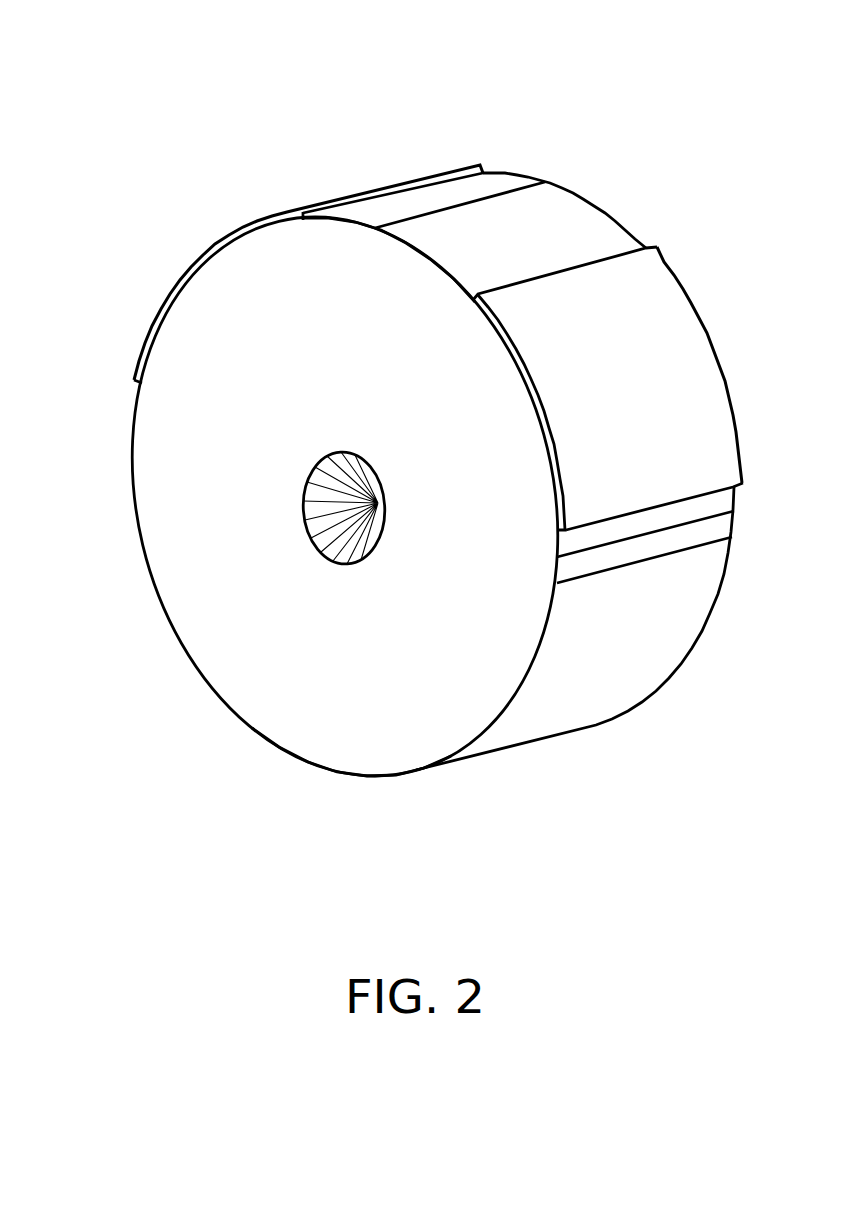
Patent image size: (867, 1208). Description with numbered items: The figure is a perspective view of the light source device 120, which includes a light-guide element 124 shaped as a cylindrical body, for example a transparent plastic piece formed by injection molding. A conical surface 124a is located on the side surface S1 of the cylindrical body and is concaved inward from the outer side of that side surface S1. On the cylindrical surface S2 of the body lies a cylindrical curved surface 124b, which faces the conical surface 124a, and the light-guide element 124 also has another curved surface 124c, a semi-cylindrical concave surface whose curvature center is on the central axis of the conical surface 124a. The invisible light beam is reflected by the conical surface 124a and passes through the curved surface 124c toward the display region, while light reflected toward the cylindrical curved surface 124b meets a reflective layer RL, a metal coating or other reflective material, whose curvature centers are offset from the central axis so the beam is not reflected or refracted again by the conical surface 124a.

The light source device 120 is at (430, 452).
The light-guide element 124 is at (372, 527).
The conical surface 124a is at (394, 472).
The cylindrical curved surface 124b is at (397, 255).
The curved surface 124c is at (351, 753).
The side surface S1 is at (298, 699).
The cylindrical surface S2 is at (627, 627).
The reflective layer RL is at (222, 244).